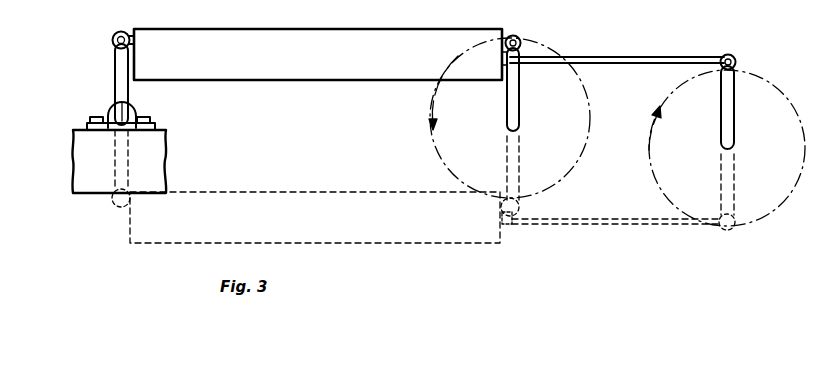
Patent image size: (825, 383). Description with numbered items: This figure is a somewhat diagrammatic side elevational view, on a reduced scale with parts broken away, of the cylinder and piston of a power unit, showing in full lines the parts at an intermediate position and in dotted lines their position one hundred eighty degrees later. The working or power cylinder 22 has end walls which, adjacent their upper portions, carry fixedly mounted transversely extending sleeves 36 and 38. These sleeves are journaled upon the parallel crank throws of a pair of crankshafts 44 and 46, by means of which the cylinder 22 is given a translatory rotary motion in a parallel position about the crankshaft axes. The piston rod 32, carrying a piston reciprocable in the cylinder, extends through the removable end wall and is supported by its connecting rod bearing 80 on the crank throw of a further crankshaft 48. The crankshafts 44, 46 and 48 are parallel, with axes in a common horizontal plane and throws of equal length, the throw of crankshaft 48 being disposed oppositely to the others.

The cylinder 22 is at (333, 43).
The piston rod 32 is at (645, 57).
The sleeve 36 is at (122, 31).
The sleeve 38 is at (522, 46).
The crankshaft 44 is at (115, 97).
The crankshaft 46 is at (506, 111).
The crankshaft 48 is at (735, 102).
The connecting rod bearing 80 is at (738, 62).